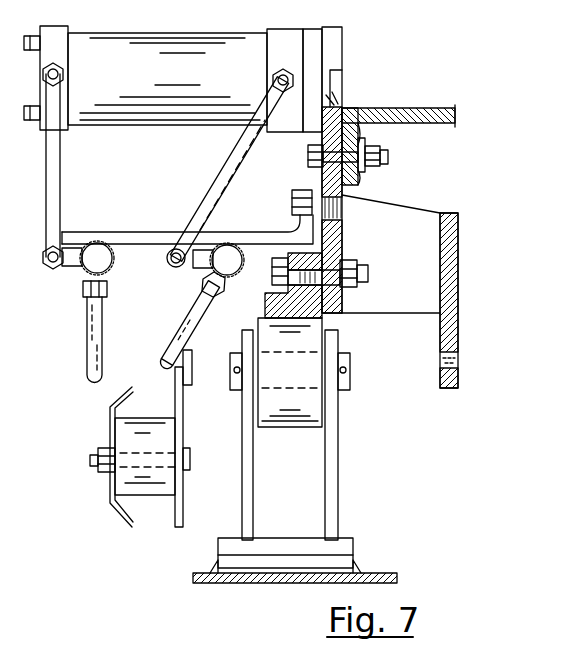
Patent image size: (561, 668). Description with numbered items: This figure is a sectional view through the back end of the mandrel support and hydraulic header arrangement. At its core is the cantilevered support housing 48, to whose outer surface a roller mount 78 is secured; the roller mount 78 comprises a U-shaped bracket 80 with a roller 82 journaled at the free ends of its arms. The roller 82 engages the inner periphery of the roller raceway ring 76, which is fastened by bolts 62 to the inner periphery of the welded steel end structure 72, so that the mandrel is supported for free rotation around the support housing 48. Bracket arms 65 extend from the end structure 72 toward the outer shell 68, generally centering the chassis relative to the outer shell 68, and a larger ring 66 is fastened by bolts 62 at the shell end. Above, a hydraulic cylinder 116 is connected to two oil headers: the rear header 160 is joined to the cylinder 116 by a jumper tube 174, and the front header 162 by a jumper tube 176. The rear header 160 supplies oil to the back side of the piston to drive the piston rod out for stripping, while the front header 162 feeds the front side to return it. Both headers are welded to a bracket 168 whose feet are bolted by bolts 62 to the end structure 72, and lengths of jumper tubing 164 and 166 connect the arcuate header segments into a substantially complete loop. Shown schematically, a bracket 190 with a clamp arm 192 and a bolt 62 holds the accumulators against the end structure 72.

The hydraulic cylinder 116 is at (212, 30).
The welded steel end structure 72 is at (336, 103).
The outer shell 68 is at (405, 112).
The bolt 62 is at (308, 155).
The jumper tube 174 is at (60, 160).
The jumper tube 176 is at (235, 152).
The bracket 168 is at (78, 232).
The front header 162 is at (260, 220).
The rear header 160 is at (112, 258).
The jumper tubing 166 is at (185, 319).
The jumper tubing 164 is at (103, 357).
The roller raceway ring 76 is at (265, 305).
The bracket arm 65 is at (385, 201).
The larger ring 66 is at (440, 330).
The U-shaped bracket 80 is at (340, 406).
The roller mount 78 is at (344, 456).
The roller 82 is at (280, 428).
The bracket 190 is at (184, 433).
The clamp arm 192 is at (128, 528).
The support housing 48 is at (377, 574).